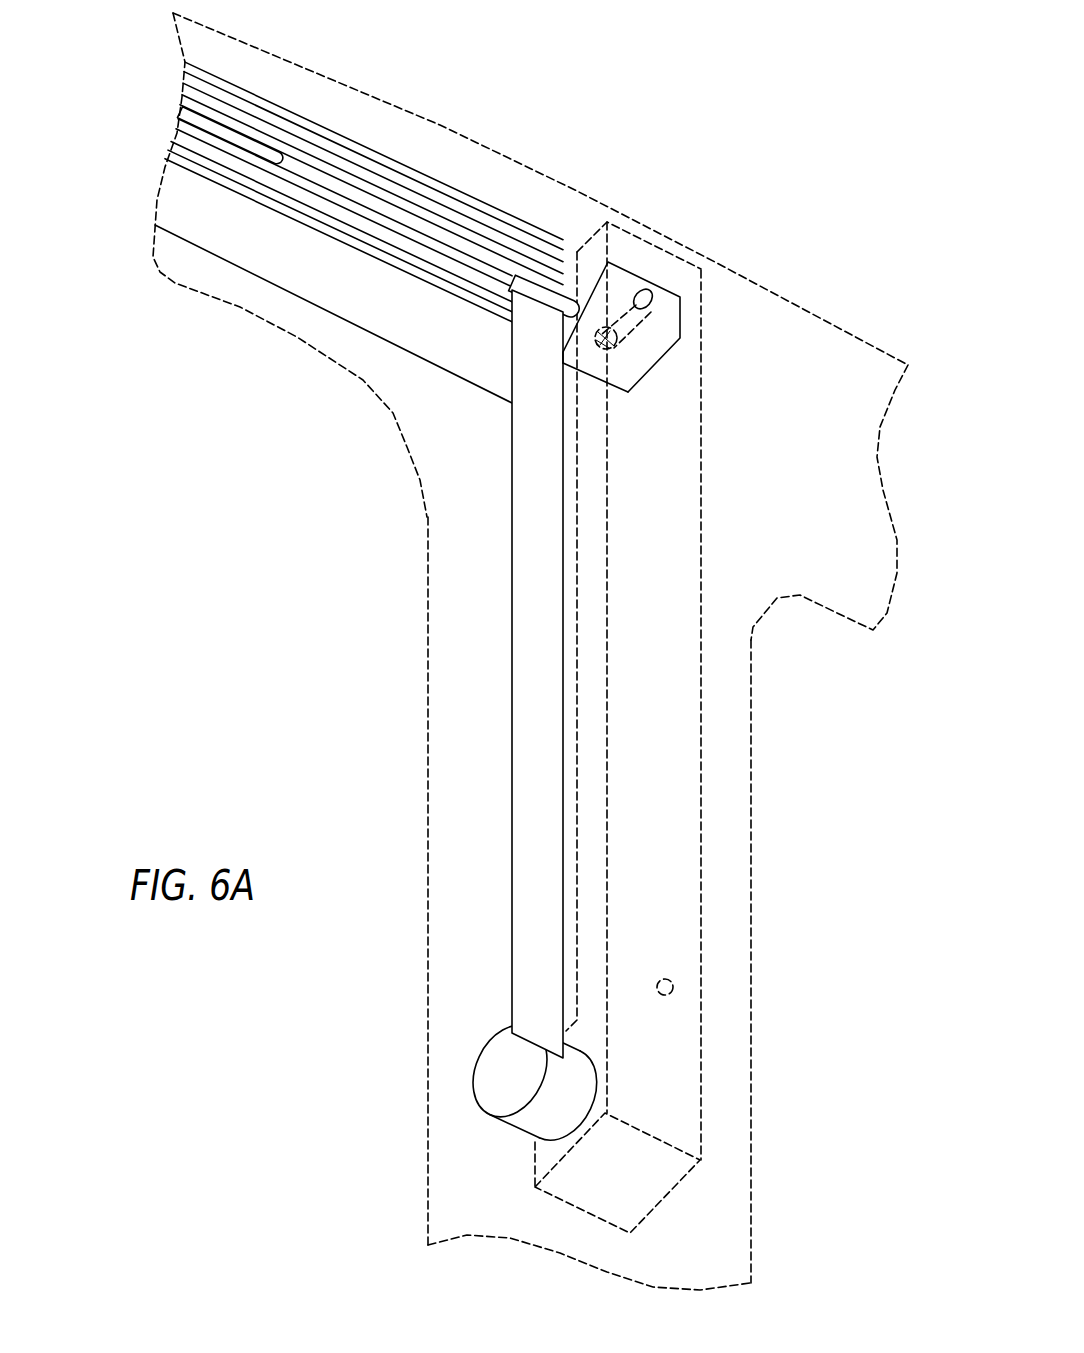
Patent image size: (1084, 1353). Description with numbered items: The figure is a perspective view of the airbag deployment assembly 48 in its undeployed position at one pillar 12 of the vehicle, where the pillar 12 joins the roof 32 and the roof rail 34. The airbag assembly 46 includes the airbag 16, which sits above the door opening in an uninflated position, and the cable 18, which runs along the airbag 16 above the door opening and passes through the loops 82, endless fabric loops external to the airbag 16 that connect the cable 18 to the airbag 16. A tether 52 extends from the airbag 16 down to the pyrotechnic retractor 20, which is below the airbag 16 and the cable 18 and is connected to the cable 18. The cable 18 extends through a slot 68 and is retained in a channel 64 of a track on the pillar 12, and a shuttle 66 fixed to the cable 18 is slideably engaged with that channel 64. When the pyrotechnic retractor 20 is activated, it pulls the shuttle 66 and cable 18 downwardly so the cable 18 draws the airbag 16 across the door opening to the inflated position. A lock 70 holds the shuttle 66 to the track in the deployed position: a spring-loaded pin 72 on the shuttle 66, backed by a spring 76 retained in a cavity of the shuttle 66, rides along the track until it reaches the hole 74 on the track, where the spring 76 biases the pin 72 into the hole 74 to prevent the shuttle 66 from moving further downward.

The pillar 12 is at (751, 818).
The airbag 16 is at (237, 268).
The cable 18 is at (218, 137).
The pyrotechnic retractor 20 is at (498, 1118).
The roof 32 is at (423, 145).
The roof rail 34 is at (518, 160).
The airbag assembly 46 is at (400, 352).
The airbag deployment assembly 48 is at (622, 400).
The tether 52 is at (512, 690).
The channel 64 is at (662, 250).
The shuttle 66 is at (635, 390).
The slot 68 is at (577, 248).
The lock 70 is at (662, 297).
The spring-loaded pin 72 is at (615, 330).
The hole 74 is at (673, 985).
The spring 76 is at (615, 350).
The loop 82 is at (288, 166).